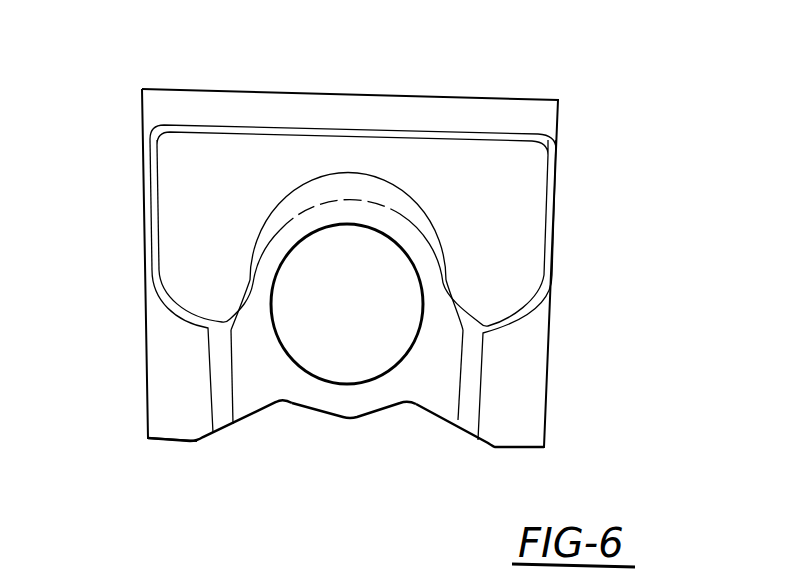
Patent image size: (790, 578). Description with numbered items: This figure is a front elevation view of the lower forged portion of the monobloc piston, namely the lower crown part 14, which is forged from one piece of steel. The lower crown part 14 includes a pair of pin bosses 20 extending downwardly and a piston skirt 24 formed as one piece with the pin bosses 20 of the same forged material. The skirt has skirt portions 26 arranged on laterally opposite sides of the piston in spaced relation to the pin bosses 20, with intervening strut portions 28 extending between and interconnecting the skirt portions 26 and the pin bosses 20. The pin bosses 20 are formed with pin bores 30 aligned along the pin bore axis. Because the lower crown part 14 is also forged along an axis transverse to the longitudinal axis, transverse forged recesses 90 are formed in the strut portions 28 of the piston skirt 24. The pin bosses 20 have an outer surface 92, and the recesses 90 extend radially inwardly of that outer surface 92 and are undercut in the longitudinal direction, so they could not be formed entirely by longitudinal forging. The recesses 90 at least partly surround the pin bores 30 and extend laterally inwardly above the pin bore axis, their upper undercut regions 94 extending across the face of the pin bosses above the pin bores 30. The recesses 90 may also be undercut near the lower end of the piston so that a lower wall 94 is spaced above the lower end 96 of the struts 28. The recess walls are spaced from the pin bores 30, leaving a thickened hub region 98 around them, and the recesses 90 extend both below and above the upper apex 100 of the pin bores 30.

The lower crown part 14 is at (580, 117).
The piston skirt 24 is at (158, 443).
The skirt portions 26 is at (157, 377).
The pin bosses 20 is at (323, 405).
The outer surface of the pin bosses 92 is at (403, 385).
The strut portions 28 is at (433, 395).
The lower end of the struts 96 is at (472, 422).
The pin bores 30 is at (300, 252).
The upper apex of the pin bores 100 is at (356, 223).
The thickened hub region 98 is at (387, 215).
The transverse forged recesses 90 is at (528, 211).
The upper undercut regions of the recesses 94 is at (528, 303).